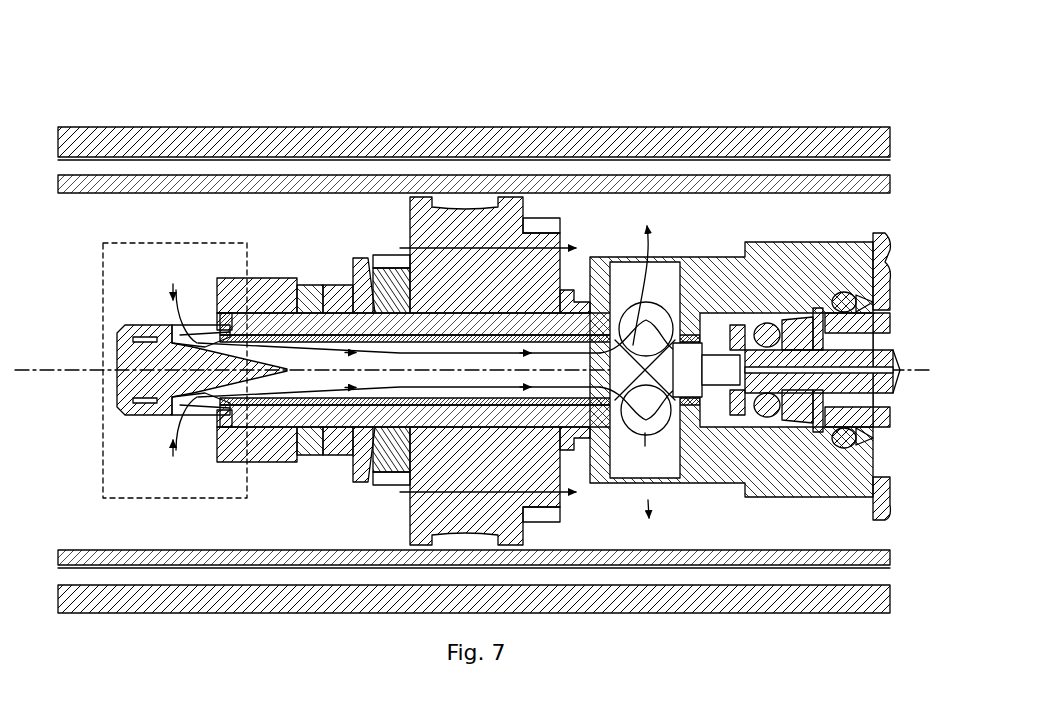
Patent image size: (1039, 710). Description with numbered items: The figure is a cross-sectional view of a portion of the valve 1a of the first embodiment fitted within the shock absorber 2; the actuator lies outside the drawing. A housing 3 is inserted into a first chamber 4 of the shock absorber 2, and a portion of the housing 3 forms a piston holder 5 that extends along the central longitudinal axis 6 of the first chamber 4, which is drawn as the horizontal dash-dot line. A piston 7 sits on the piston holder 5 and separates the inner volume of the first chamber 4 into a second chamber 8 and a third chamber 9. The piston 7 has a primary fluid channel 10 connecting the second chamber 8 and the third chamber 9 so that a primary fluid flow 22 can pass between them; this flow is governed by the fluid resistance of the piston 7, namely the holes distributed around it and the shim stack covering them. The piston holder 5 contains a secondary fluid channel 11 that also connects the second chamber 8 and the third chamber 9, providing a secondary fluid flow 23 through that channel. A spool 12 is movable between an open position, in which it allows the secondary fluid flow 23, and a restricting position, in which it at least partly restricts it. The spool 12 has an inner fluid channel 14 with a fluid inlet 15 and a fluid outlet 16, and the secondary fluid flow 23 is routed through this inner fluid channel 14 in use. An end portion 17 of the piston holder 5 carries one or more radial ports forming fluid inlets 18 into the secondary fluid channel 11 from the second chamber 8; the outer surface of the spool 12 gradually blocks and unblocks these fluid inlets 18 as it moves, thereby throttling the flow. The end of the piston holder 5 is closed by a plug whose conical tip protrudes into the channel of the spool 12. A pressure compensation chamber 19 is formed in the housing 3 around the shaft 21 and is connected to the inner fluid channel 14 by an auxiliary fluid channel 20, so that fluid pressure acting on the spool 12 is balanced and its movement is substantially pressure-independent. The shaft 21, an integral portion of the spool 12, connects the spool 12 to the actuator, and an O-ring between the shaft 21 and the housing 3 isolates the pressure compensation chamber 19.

The valve 1a is at (640, 228).
The shock absorber 2 is at (150, 92).
The housing 3 is at (772, 257).
The first chamber 4 is at (567, 210).
The piston holder 5 is at (397, 327).
The central longitudinal axis 6 is at (900, 366).
The piston 7 is at (458, 360).
The second chamber 8 is at (315, 252).
The third chamber 9 is at (607, 208).
The primary fluid channel 10 is at (396, 229).
The secondary fluid channel 11 is at (321, 340).
The spool 12 is at (412, 337).
The inner fluid channel 14 is at (540, 184).
The fluid inlet 15 is at (222, 330).
The fluid outlet 16 is at (634, 345).
The end portion 17 is at (157, 243).
The fluid inlets 18 is at (190, 325).
The pressure compensation chamber 19 is at (726, 345).
The auxiliary fluid channel 20 is at (733, 365).
The shaft 21 is at (788, 357).
The primary fluid flow 22 is at (567, 494).
The secondary fluid flow 23 is at (645, 433).